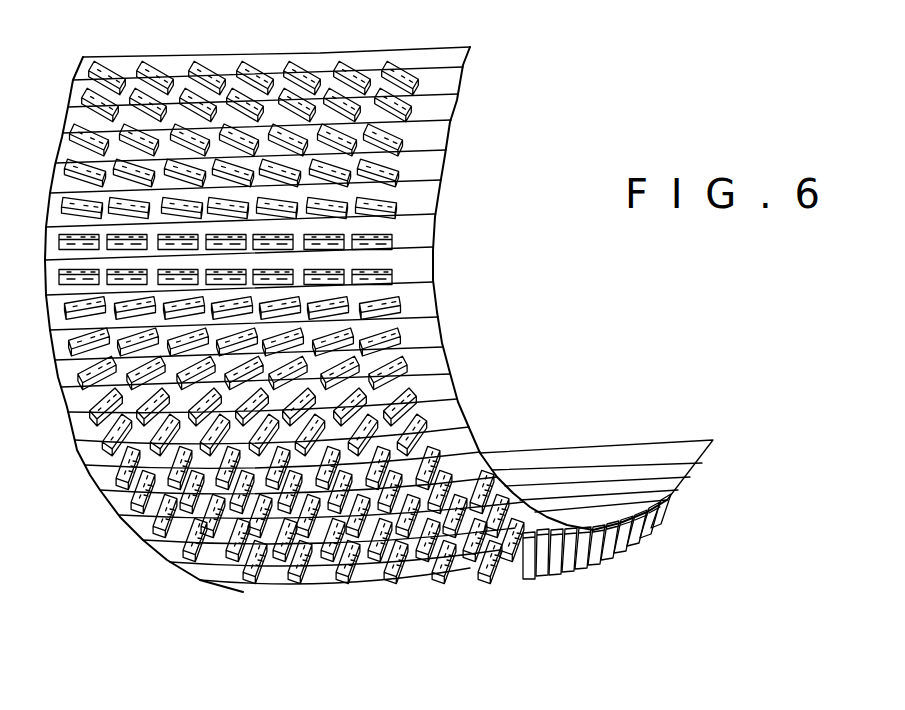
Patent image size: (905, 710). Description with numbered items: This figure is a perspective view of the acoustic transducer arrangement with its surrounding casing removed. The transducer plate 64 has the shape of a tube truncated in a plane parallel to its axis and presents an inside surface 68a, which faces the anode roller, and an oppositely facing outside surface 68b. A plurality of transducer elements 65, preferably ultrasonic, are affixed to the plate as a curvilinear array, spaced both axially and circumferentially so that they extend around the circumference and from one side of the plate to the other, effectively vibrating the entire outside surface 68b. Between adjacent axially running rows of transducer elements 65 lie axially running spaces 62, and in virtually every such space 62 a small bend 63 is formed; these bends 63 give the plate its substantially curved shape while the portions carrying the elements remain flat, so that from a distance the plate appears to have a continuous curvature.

The axially running space 62 is at (78, 80).
The bend 63 is at (457, 107).
The transducer plate 64 is at (433, 173).
The transducer element 65 is at (255, 53).
The inside surface 68a is at (677, 450).
The outside surface 68b is at (460, 413).